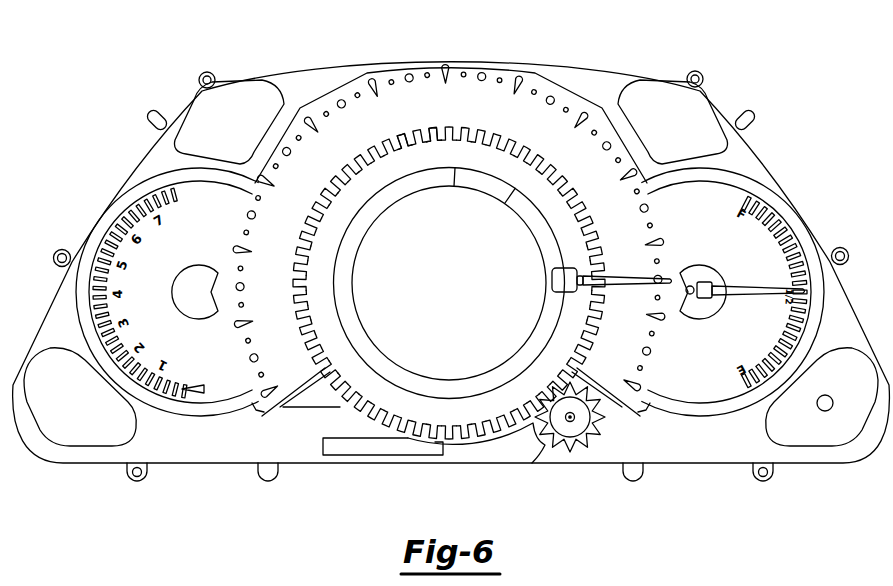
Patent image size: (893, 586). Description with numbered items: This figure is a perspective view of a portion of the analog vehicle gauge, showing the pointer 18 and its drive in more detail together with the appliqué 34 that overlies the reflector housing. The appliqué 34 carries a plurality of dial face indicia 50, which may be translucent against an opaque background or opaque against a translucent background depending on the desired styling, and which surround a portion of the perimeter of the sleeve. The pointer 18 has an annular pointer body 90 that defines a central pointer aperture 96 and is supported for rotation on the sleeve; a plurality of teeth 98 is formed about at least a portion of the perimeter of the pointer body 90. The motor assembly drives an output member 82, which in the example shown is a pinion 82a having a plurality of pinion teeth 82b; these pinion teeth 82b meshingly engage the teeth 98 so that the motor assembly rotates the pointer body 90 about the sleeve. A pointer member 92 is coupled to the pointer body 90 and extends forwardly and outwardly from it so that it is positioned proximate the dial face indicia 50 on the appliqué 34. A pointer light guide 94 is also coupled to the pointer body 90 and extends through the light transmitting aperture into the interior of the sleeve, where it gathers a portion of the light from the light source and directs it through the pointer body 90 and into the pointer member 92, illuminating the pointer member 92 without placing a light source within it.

The pointer 18 is at (603, 206).
The appliqué 34 is at (497, 72).
The dial face indicia 50 is at (462, 95).
The output member 82 is at (570, 452).
The pinion 82a is at (603, 426).
The pinion teeth 82b is at (533, 463).
The pointer body 90 is at (520, 174).
The pointer member 92 is at (662, 273).
The pointer light guide 94 is at (358, 228).
The pointer aperture 96 is at (456, 170).
The teeth 98 is at (432, 128).